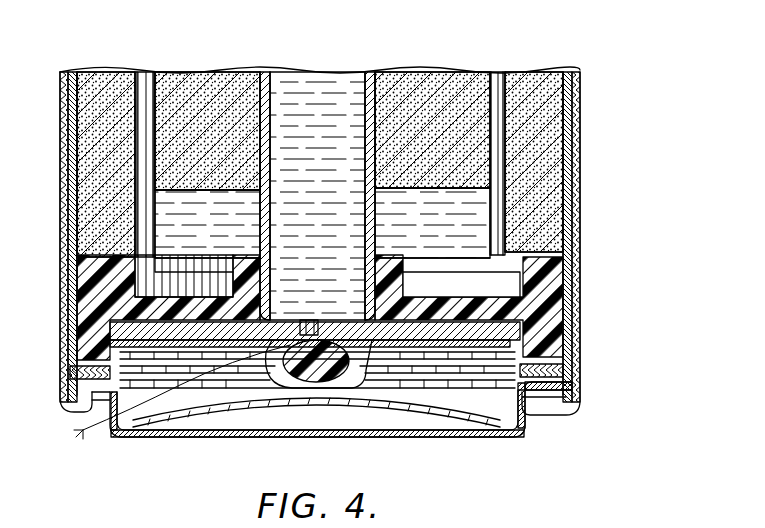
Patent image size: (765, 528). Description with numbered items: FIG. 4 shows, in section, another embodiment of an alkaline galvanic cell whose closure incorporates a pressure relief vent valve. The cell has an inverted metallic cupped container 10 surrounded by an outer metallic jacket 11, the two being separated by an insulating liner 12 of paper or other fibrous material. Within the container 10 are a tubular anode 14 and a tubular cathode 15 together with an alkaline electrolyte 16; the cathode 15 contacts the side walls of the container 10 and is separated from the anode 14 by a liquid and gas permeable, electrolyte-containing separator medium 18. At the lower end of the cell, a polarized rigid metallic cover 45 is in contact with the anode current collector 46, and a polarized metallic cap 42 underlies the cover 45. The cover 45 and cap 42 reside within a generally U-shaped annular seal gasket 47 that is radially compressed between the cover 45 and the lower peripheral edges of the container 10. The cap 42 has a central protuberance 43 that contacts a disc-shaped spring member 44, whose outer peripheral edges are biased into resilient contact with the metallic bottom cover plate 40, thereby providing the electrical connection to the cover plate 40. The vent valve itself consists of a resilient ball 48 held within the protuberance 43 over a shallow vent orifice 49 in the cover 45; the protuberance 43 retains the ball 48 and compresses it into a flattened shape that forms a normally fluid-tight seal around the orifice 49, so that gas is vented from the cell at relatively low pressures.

The container 10 is at (568, 100).
The outer metallic jacket 11 is at (580, 130).
The insulating liner 12 is at (570, 158).
The tubular anode 14 is at (413, 85).
The tubular cathode 15 is at (533, 78).
The alkaline electrolyte 16 is at (330, 80).
The separator medium 18 is at (492, 80).
The metallic bottom cover plate 40 is at (495, 430).
The polarized metallic cap 42 is at (460, 343).
The central protuberance 43 is at (331, 385).
The disc-shaped spring member 44 is at (220, 403).
The rigid metallic cover 45 is at (407, 335).
The anode current collector 46 is at (268, 83).
The annular seal gasket 47 is at (552, 310).
The resilient ball 48 is at (305, 378).
The vent orifice 49 is at (312, 330).